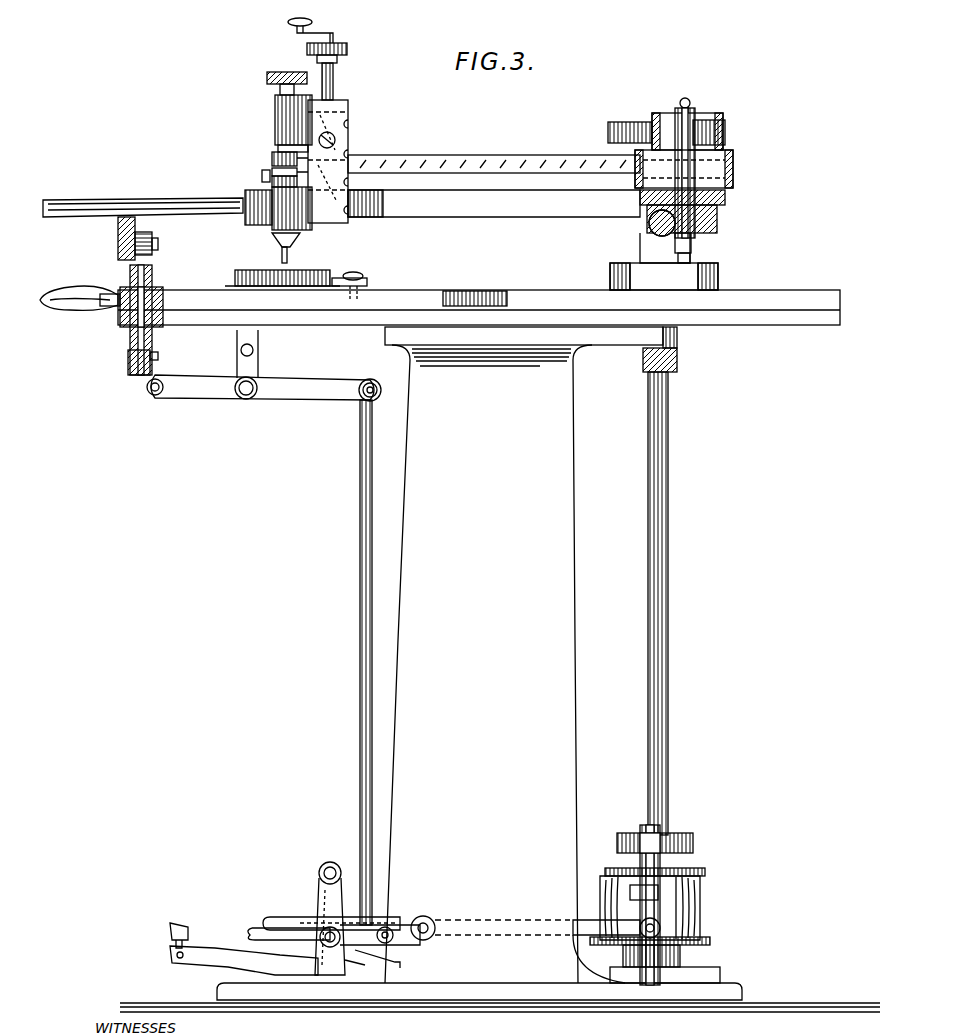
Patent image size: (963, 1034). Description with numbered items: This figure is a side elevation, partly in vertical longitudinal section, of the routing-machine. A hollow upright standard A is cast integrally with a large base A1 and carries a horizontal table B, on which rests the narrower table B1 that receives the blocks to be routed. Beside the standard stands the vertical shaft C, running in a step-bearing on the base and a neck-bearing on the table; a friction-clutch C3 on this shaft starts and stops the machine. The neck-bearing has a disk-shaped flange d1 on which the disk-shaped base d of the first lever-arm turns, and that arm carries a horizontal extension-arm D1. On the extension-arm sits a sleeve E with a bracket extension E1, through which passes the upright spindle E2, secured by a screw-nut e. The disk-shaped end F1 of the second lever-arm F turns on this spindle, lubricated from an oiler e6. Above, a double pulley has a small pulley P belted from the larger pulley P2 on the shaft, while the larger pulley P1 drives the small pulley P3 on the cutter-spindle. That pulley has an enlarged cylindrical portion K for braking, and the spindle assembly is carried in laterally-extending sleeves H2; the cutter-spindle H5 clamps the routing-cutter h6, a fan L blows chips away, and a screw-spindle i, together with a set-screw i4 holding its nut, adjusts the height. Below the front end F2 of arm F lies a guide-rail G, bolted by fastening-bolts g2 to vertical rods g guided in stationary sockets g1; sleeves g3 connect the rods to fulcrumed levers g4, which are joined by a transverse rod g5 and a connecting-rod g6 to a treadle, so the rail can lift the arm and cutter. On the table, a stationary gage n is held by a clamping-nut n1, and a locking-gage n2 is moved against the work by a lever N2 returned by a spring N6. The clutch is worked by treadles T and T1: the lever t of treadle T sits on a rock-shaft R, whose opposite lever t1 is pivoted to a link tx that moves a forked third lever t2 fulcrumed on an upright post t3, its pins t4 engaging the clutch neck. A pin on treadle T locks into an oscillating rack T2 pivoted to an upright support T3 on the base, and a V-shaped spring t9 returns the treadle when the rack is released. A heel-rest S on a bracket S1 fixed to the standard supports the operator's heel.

The hollow upright standard A is at (524, 655).
The base A1 is at (217, 995).
The horizontal table B is at (300, 318).
The narrower table B1 is at (436, 300).
The vertical shaft C is at (665, 581).
The friction-clutch C3 is at (700, 886).
The second lever-arm F is at (476, 205).
The disk-shaped end F1 is at (640, 198).
The front end of lever-arm F2 is at (148, 188).
The guide-rail G is at (118, 230).
The vertical rods g is at (152, 272).
The stationary sockets g1 is at (128, 312).
The fastening-bolts g2 is at (158, 244).
The sleeves g3 is at (128, 364).
The fulcrumed levers g4 is at (207, 392).
The transverse rod g5 is at (392, 392).
The connecting-rod g6 is at (360, 647).
The laterally-extending sleeves H2 is at (275, 124).
The cutter-spindle H5 is at (287, 72).
The screw-spindle i is at (343, 60).
The set-screw i4 is at (335, 140).
The enlarged cylindrical portion K is at (262, 177).
The fan L is at (300, 240).
The routing-cutter h6 is at (288, 257).
The lever N2 is at (79, 285).
The spring N6 is at (108, 300).
The stationary gage n is at (340, 283).
The clamping-nut n1 is at (365, 278).
The locking-gage n2 is at (235, 278).
The small pulley P is at (695, 125).
The larger pulley P1 is at (733, 152).
The larger pulley on driving-shaft P2 is at (610, 148).
The drive-pulley of cutter-spindle P3 is at (272, 162).
The sleeve E is at (650, 240).
The bracket extension E1 is at (700, 236).
The upright spindle E2 is at (688, 130).
The screw-nut e is at (690, 256).
The oiler e6 is at (681, 94).
The extension-arm D1 is at (650, 224).
The disk-shaped base d is at (610, 270).
The disk-shaped flange d1 is at (612, 286).
The rock-shaft R is at (425, 926).
The heel-rest S is at (176, 923).
The bracket S1 is at (170, 956).
The treadle T is at (300, 917).
The releasing treadle T1 is at (252, 934).
The oscillating rack T2 is at (332, 960).
The upright support T3 is at (320, 867).
The lever of treadle t is at (380, 930).
The oppositely-projecting lever t1 is at (705, 872).
The third lever t2 is at (650, 843).
The upright post t3 is at (680, 958).
The pins t4 is at (617, 848).
The V-shaped spring t9 is at (380, 963).
The link tx is at (660, 928).